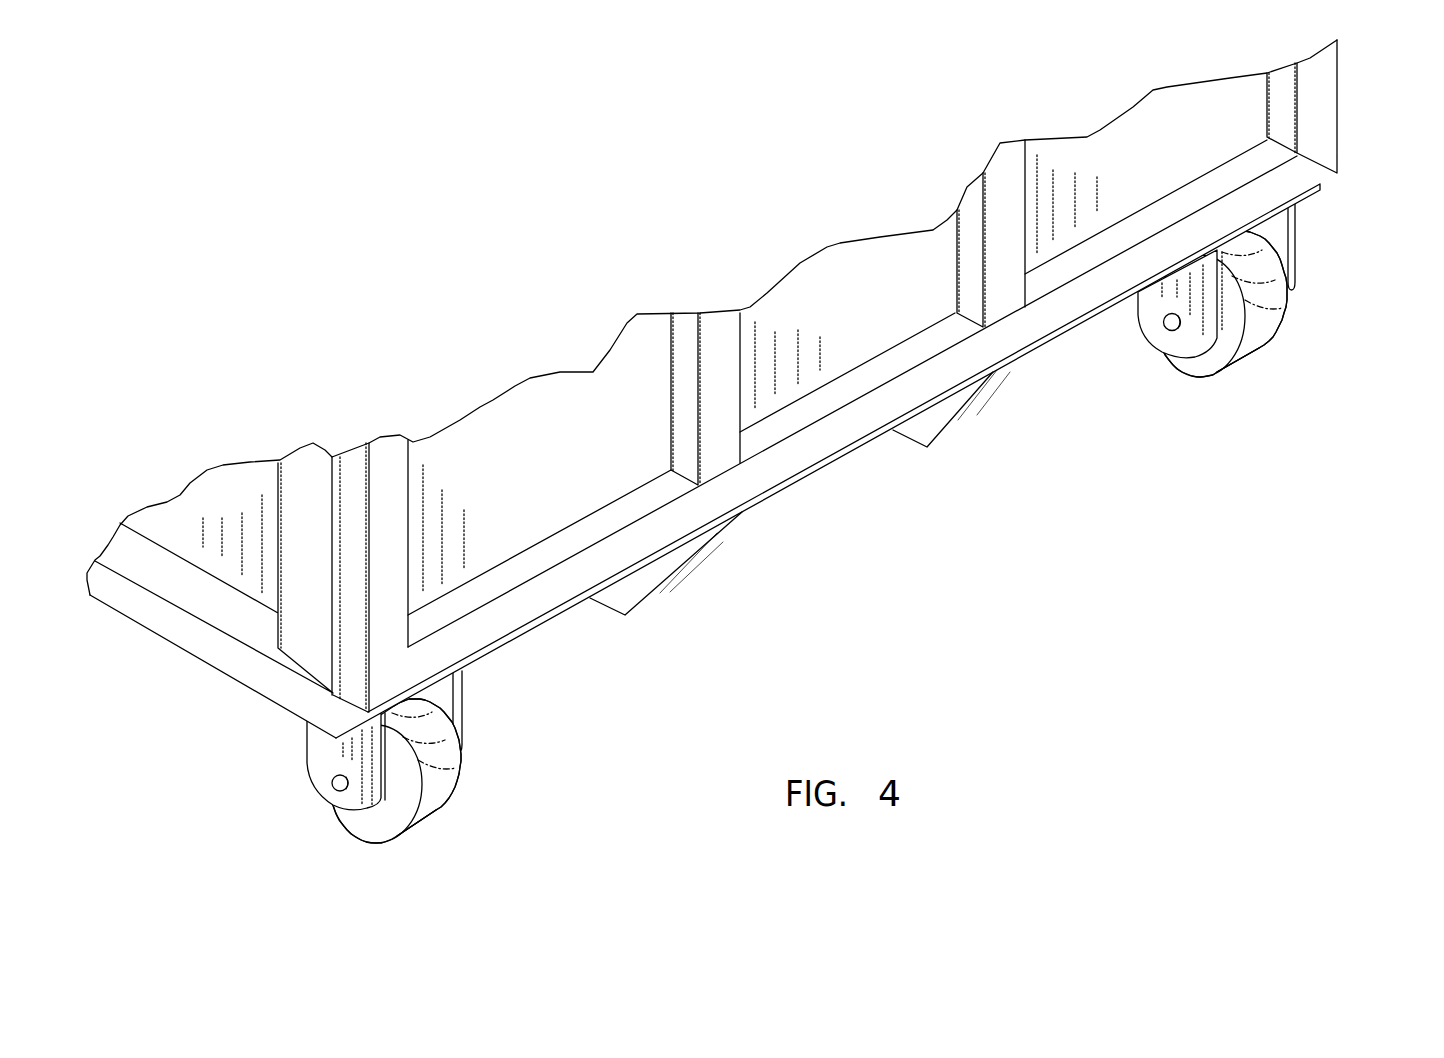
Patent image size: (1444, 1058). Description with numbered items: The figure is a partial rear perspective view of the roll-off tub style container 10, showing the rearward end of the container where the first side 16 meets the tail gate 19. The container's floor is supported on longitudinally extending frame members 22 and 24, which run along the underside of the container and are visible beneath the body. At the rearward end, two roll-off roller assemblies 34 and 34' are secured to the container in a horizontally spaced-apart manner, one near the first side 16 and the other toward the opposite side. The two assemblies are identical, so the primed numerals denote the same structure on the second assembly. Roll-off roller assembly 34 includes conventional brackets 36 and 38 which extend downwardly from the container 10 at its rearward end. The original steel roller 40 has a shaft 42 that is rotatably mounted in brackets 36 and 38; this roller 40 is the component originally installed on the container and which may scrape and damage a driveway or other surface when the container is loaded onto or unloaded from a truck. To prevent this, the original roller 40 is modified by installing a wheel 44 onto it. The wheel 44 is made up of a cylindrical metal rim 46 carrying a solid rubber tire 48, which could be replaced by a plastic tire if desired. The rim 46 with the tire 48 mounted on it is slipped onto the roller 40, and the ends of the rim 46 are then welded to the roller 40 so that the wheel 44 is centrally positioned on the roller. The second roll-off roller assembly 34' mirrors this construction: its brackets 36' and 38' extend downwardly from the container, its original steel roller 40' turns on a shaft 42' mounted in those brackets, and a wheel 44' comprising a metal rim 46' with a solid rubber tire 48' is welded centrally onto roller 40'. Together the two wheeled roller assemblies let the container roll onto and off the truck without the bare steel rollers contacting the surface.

The roll-off tub style container 10 is at (523, 347).
The first side 16 is at (197, 688).
The tail gate 19 is at (884, 311).
The frame member 22 is at (648, 572).
The frame member 24 is at (965, 407).
The roll-off roller assembly 34 is at (344, 801).
The bracket 36 is at (285, 763).
The bracket 38 is at (521, 711).
The original steel roller 40 is at (423, 820).
The shaft 42 is at (270, 817).
The wheel 44 is at (499, 767).
The cylindrical metal rim 46 is at (496, 740).
The solid rubber tire 48 is at (491, 844).
The roll-off roller assembly 34' is at (1202, 385).
The bracket 36' is at (1132, 336).
The bracket 38' is at (1365, 243).
The original steel roller 40' is at (1281, 312).
The shaft 42' is at (1128, 395).
The wheel 44' is at (1299, 357).
The cylindrical metal rim 46' is at (1327, 303).
The solid rubber tire 48' is at (1240, 424).